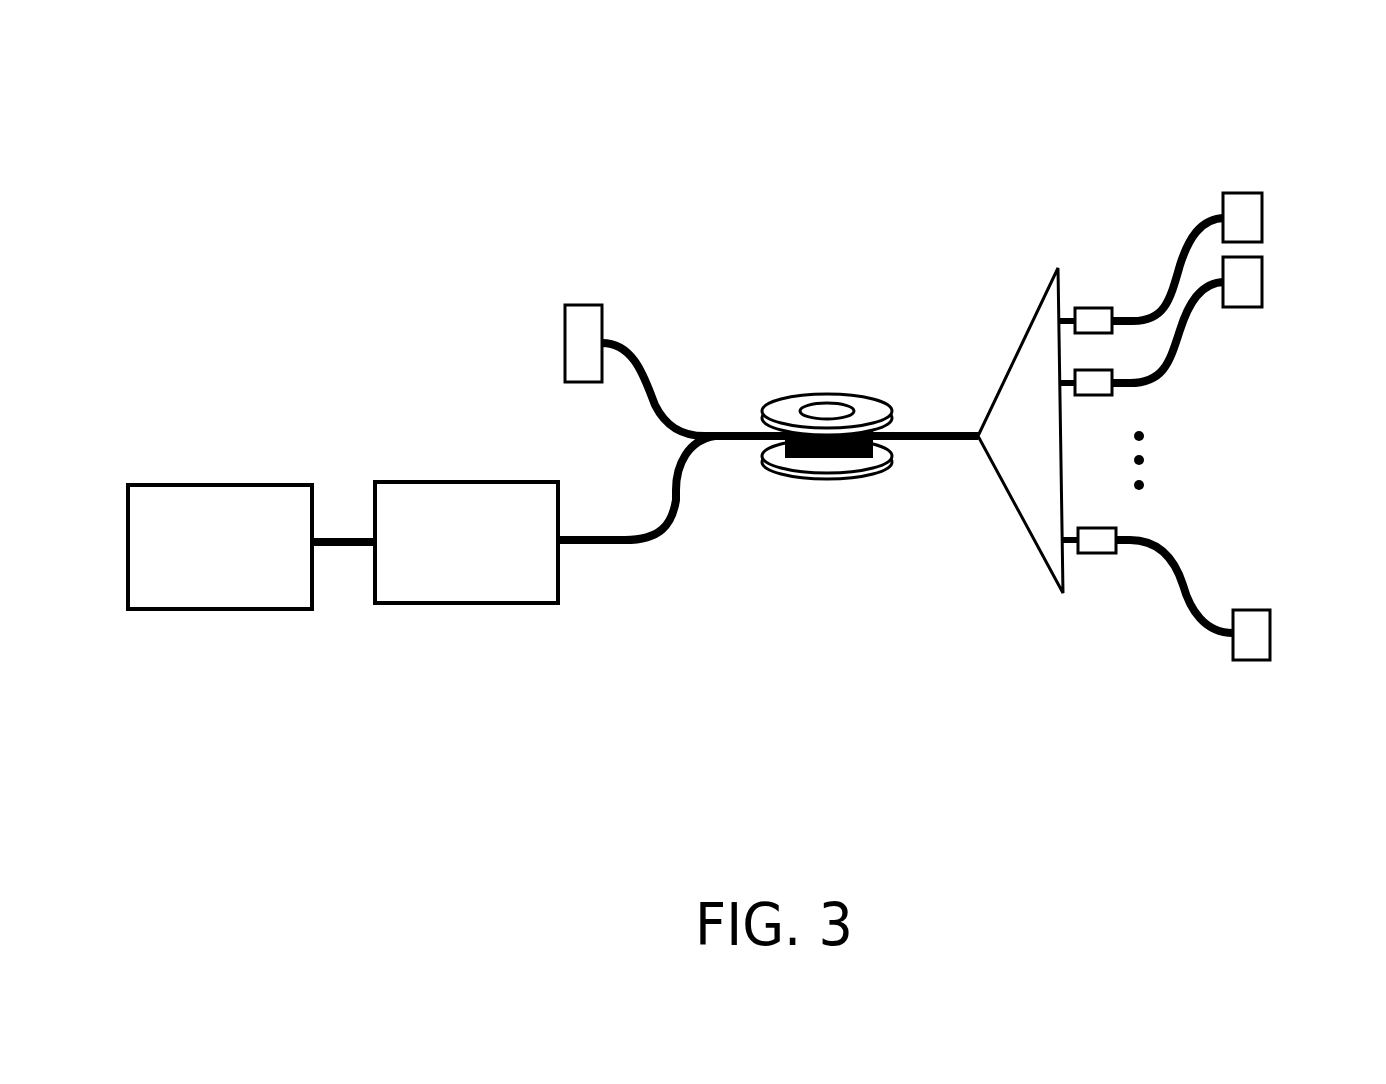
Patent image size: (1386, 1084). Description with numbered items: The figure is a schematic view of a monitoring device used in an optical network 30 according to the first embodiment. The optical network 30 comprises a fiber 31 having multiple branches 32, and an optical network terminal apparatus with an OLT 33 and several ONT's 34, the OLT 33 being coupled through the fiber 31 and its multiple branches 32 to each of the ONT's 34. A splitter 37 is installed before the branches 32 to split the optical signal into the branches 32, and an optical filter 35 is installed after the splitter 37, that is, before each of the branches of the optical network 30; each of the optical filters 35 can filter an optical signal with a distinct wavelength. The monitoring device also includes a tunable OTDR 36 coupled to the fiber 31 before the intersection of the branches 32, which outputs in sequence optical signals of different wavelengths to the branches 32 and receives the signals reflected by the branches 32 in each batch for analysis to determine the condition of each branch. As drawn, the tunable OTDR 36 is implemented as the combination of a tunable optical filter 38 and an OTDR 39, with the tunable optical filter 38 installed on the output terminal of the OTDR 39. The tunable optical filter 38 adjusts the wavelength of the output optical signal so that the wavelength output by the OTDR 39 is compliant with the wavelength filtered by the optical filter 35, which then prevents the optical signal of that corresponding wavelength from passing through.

The optical network 30 is at (1252, 125).
The fiber 31 is at (782, 396).
The branches 32 is at (1202, 222).
The OLT 33 is at (578, 305).
The ONT 34 is at (1270, 645).
The optical filter 35 is at (1095, 308).
The tunable OTDR 36 is at (343, 670).
The splitter 37 is at (1010, 367).
The tunable optical filter 38 is at (466, 614).
The OTDR 39 is at (198, 610).